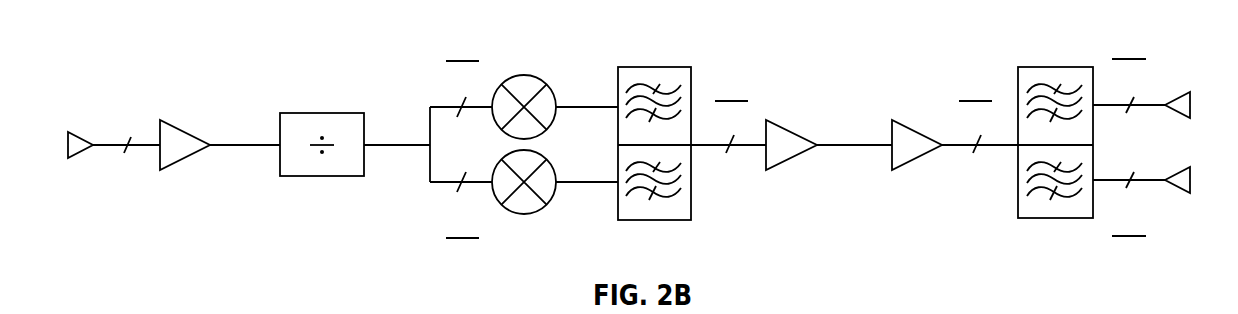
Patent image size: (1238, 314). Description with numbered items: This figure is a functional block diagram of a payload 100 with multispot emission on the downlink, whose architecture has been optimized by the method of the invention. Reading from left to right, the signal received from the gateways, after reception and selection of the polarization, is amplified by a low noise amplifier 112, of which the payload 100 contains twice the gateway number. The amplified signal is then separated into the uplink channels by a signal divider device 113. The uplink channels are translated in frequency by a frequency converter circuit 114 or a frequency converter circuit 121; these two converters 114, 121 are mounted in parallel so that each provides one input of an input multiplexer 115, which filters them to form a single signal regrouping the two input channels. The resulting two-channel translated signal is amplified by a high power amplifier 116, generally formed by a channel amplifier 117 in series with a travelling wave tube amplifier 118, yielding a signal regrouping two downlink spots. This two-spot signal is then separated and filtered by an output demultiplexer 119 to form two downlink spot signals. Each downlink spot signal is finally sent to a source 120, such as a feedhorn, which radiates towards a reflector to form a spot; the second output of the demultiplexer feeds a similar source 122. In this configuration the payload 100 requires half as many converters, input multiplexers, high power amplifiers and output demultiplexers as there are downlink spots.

The payload 100 is at (152, 33).
The low noise amplifier 112 is at (172, 121).
The signal divider device 113 is at (323, 113).
The frequency converter circuit 114 is at (525, 75).
The input multiplexer 115 is at (648, 67).
The high power amplifier 116 is at (854, 158).
The channel amplifier 117 is at (777, 121).
The travelling wave tube amplifier 118 is at (905, 120).
The output demultiplexer 119 is at (1058, 67).
The source 120 is at (1183, 92).
The frequency converter circuit 121 is at (519, 213).
The output port / antenna 122 is at (1181, 191).